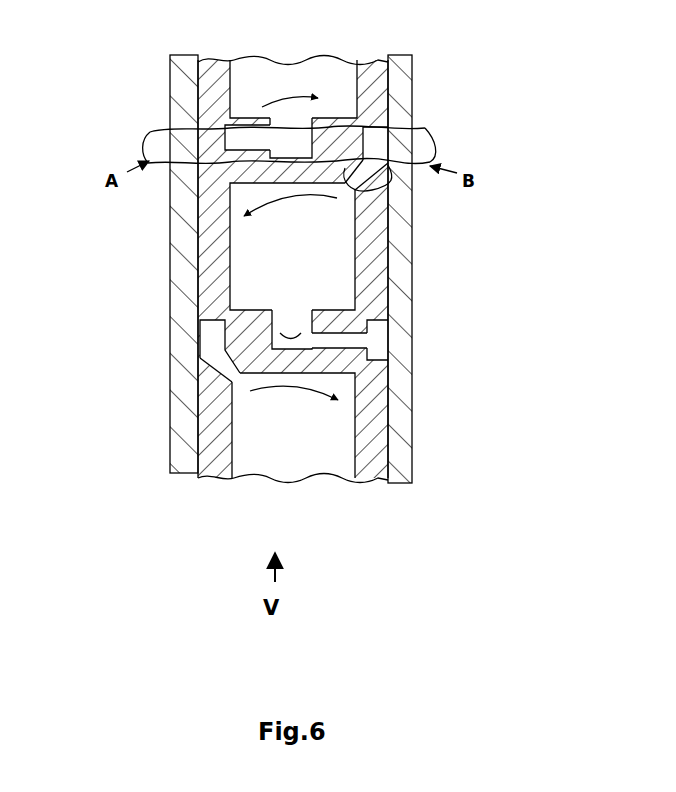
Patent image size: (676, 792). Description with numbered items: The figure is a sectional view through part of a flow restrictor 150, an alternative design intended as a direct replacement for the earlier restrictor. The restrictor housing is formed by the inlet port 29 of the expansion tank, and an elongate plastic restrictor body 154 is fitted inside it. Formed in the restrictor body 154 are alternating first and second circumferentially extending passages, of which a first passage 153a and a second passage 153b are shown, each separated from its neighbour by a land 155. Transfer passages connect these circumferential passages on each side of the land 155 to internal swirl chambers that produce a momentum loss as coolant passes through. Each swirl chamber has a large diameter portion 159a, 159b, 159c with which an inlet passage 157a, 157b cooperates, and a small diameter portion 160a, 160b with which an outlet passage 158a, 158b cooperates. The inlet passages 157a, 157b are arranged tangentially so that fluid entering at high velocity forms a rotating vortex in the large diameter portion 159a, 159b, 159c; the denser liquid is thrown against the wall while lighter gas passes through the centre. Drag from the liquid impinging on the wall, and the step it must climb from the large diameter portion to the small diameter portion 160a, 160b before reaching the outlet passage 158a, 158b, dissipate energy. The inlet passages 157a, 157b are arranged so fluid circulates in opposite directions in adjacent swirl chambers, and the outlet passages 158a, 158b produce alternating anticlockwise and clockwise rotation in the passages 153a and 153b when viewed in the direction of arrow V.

The flow restrictor 150 is at (150, 75).
The restrictor body 154 is at (383, 88).
The inlet port 29 is at (413, 250).
The land 155 is at (173, 223).
The large diameter portion 159a is at (350, 75).
The small diameter portion 160a is at (306, 131).
The outlet passage 158a is at (235, 145).
The first circumferentially extending passage 153a is at (370, 137).
The inlet passage 157a is at (400, 153).
The large diameter portion 159b is at (350, 247).
The small diameter portion 160b is at (277, 319).
The second circumferentially extending passage 153b is at (372, 330).
The outlet passage 158b is at (337, 335).
The inlet passage 157b is at (232, 359).
The large diameter portion 159c is at (233, 452).